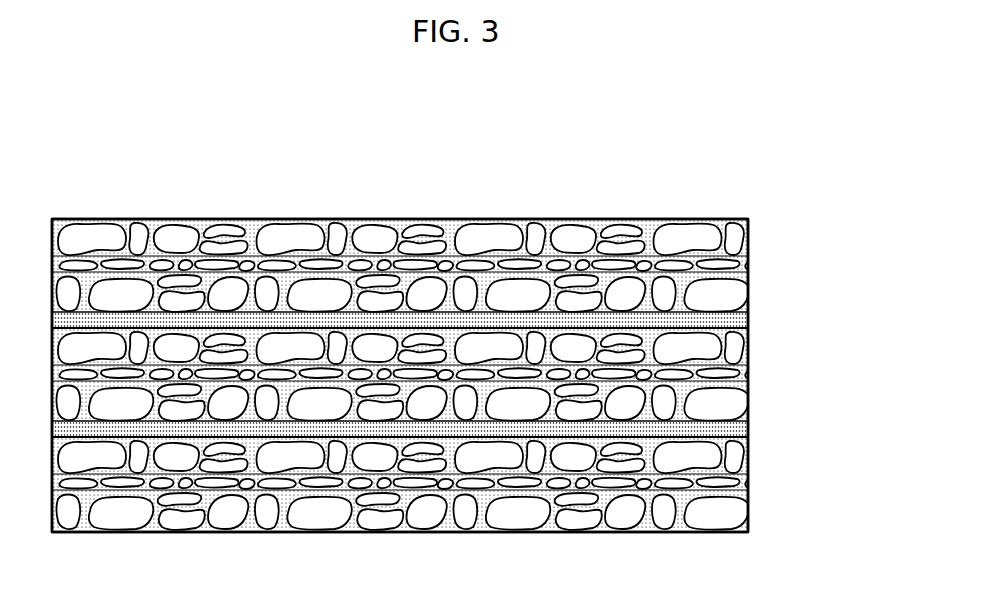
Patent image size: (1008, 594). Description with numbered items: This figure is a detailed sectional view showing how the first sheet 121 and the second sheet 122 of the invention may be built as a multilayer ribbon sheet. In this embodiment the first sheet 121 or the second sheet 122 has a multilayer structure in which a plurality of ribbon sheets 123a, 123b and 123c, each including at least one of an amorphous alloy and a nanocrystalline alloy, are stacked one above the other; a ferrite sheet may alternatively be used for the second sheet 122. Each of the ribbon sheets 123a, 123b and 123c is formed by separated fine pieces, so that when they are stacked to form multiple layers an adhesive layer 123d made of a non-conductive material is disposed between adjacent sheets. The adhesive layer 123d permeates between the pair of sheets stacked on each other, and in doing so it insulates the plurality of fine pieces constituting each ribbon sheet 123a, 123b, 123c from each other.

The first sheet 121 is at (458, 155).
The second sheet 122 is at (400, 375).
The ribbon sheet 123a is at (750, 493).
The ribbon sheet 123b is at (750, 388).
The ribbon sheet 123c is at (750, 279).
The adhesive layer 123d is at (750, 318).